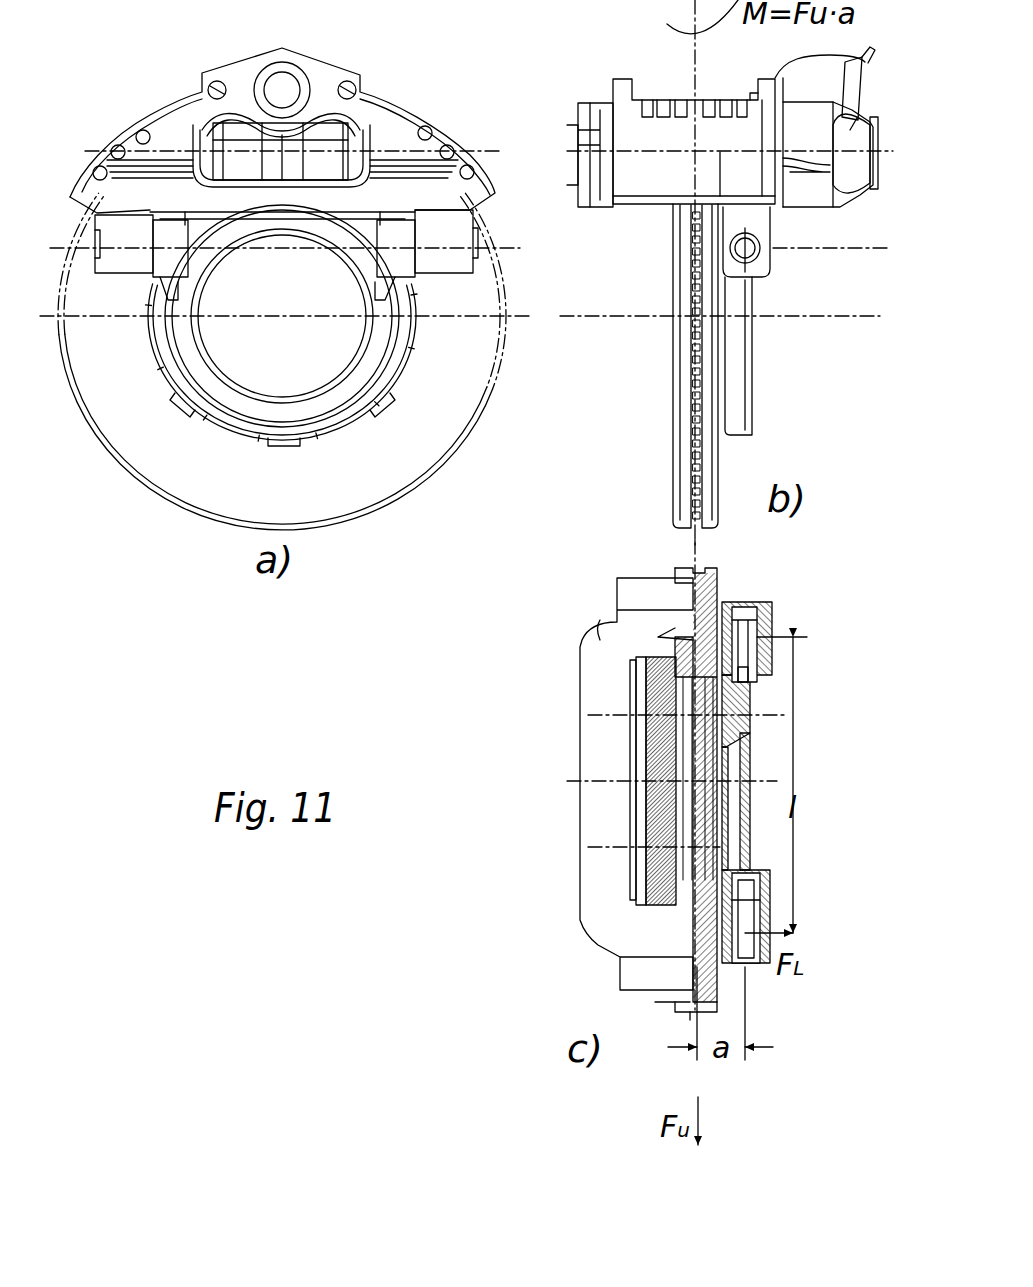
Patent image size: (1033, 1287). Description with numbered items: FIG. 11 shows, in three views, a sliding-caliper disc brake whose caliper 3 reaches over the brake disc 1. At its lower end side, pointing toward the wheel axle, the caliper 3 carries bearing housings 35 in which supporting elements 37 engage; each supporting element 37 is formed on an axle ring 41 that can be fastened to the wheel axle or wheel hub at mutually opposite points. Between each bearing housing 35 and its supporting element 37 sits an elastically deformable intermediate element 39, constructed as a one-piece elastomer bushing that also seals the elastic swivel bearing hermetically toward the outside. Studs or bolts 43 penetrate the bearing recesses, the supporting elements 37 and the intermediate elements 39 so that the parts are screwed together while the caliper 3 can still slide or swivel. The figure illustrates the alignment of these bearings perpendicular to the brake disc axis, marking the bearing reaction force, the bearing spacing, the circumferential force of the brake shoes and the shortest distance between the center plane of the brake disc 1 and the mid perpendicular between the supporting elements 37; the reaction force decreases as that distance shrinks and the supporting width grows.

The brake disc 1 is at (685, 403).
The caliper 3 is at (478, 182).
The bearing housing 35 is at (437, 262).
The supporting element 37 is at (733, 243).
The intermediate element 39 is at (730, 258).
The axle ring 41 is at (735, 384).
The stud or bolt 43 is at (745, 627).